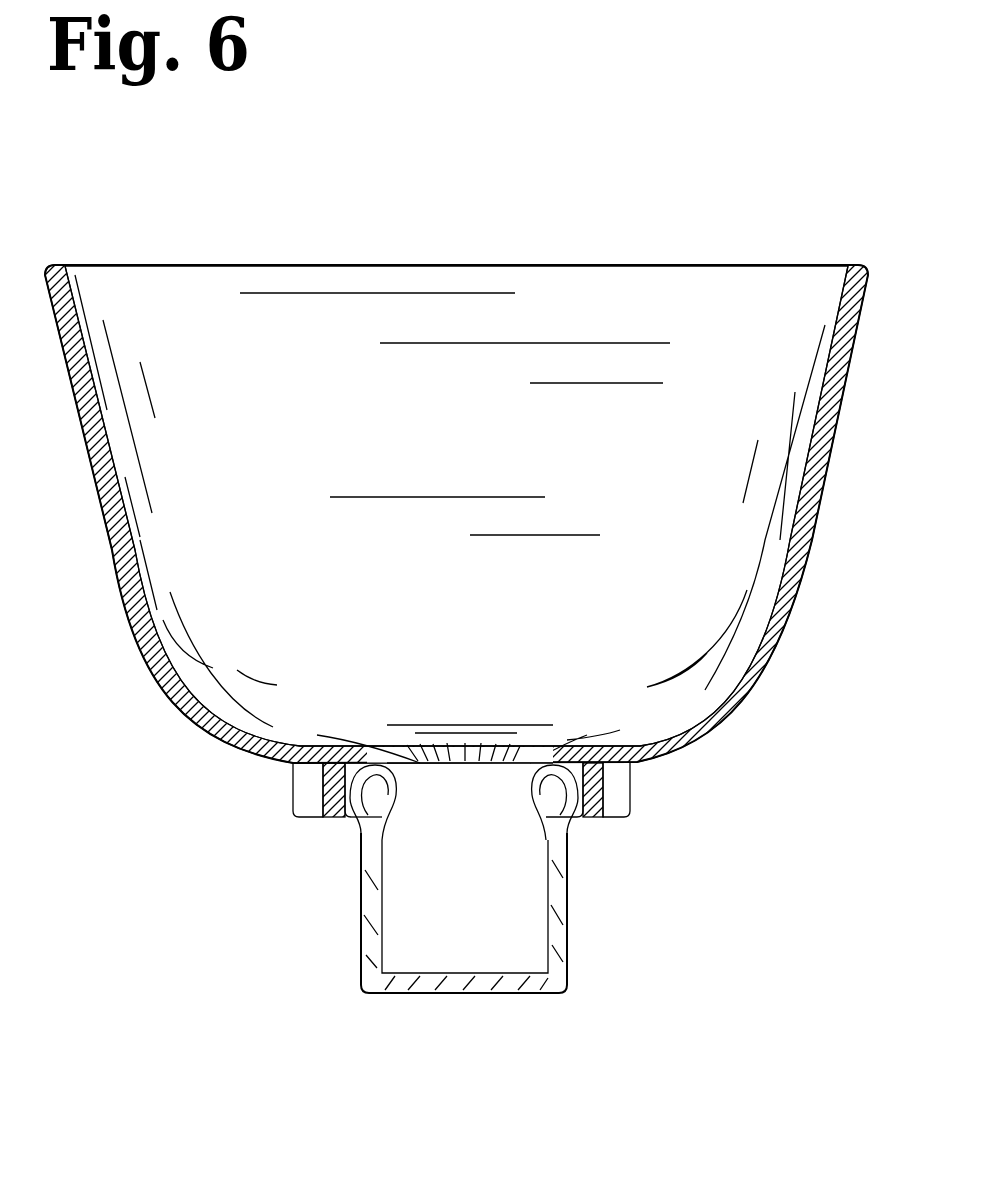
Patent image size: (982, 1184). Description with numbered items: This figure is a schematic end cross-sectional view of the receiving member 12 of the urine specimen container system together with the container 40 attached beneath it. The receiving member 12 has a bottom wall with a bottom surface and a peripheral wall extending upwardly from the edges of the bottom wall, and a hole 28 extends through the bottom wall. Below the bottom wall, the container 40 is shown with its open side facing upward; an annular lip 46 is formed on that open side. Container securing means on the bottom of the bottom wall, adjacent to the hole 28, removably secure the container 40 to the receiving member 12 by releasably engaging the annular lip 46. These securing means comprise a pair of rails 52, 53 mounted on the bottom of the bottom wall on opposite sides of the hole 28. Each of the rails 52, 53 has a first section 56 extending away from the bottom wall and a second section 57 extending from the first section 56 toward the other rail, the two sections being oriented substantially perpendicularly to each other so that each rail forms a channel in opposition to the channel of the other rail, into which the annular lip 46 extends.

The receiving member 12 is at (613, 305).
The hole 28 is at (470, 757).
The container 40 is at (557, 908).
The annular lip 46 is at (343, 827).
The rail 52 is at (627, 777).
The rail 53 is at (307, 777).
The first section 56 is at (330, 782).
The second section 57 is at (313, 817).